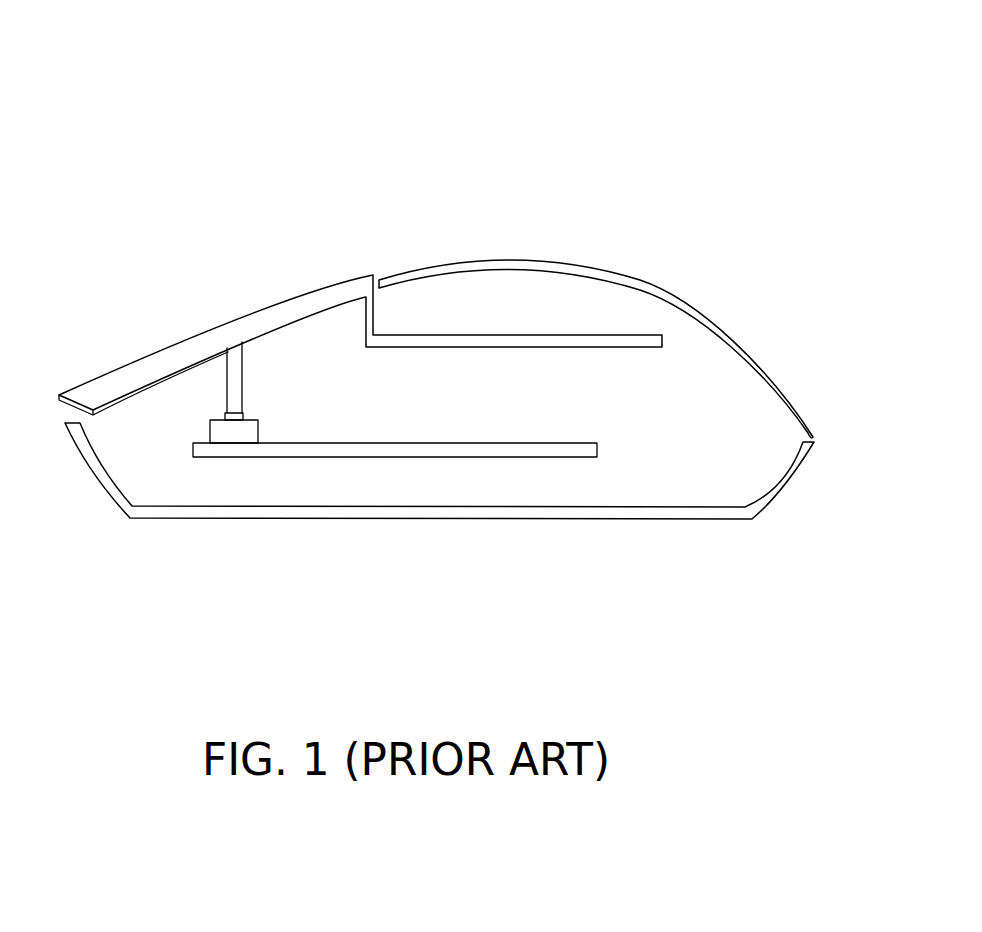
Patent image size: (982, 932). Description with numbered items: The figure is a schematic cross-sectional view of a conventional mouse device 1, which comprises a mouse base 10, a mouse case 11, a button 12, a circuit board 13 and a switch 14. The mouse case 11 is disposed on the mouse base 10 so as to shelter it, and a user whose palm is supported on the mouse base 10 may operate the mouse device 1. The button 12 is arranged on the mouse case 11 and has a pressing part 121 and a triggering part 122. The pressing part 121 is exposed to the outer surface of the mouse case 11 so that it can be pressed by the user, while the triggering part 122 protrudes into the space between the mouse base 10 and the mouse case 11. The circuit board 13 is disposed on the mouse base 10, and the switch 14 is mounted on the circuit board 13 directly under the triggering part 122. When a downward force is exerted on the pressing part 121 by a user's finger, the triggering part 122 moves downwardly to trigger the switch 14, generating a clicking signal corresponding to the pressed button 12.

The mouse device 1 is at (780, 26).
The mouse base 10 is at (523, 510).
The mouse case 11 is at (605, 273).
The button 12 is at (360, 311).
The pressing part 121 is at (288, 308).
The triggering part 122 is at (232, 383).
The circuit board 13 is at (327, 448).
The switch 14 is at (242, 432).